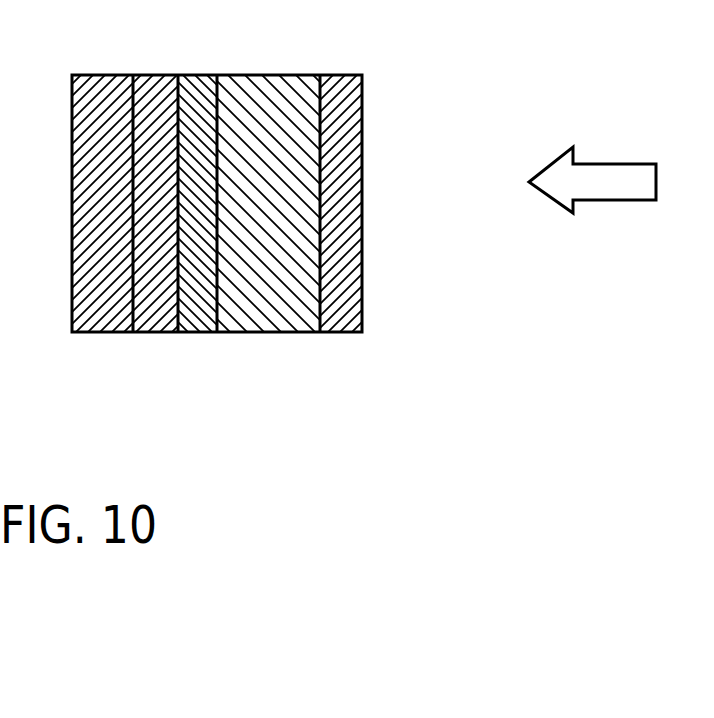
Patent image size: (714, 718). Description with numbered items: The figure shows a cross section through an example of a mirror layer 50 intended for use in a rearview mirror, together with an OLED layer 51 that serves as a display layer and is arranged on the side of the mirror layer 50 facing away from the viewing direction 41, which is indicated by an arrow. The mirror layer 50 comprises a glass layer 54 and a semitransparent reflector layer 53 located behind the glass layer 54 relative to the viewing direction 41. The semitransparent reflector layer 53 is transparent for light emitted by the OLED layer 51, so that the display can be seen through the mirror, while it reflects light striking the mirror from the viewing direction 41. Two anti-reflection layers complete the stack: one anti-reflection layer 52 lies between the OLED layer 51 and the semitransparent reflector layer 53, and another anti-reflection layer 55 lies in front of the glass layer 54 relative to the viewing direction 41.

The viewing direction 41 is at (624, 180).
The mirror layer 50 is at (252, 266).
The OLED layer 51 is at (92, 142).
The anti-reflection layer 52 is at (154, 295).
The semitransparent reflector layer 53 is at (198, 141).
The glass layer 54 is at (277, 295).
The anti-reflection layer 55 is at (341, 142).